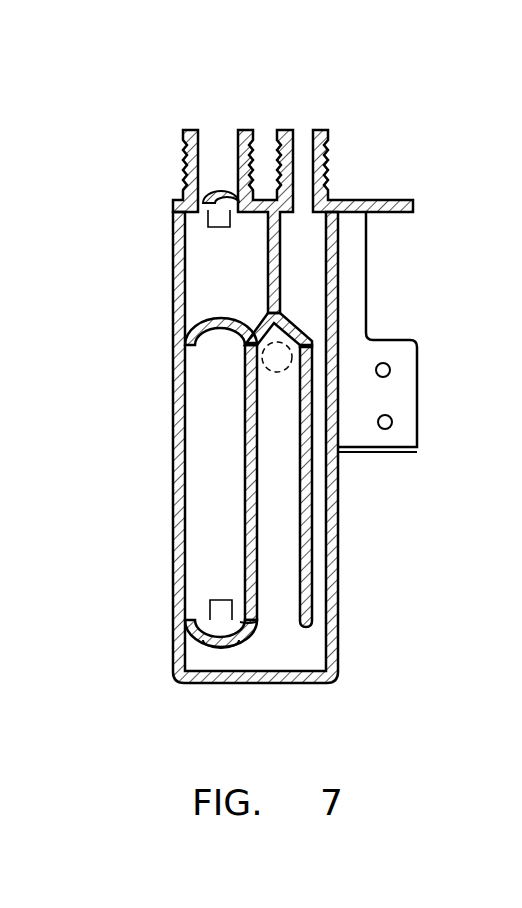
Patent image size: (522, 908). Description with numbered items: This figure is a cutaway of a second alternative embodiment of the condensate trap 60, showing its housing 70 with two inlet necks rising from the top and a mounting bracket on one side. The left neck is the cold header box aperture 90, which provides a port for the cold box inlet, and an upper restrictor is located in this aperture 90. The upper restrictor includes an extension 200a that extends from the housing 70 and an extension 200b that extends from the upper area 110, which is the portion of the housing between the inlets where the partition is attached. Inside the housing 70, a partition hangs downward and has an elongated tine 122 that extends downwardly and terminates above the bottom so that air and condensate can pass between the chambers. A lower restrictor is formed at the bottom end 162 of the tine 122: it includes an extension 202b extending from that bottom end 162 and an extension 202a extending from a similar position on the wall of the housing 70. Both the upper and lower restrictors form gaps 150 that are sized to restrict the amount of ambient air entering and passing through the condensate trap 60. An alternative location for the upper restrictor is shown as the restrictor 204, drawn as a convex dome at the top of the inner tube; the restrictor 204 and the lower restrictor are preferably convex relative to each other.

The condensate trap 60 is at (402, 162).
The housing 70 is at (173, 343).
The cold header box aperture 90 is at (210, 143).
The upper area 110 is at (267, 200).
The elongated tine 122 is at (243, 493).
The gaps 150 is at (219, 227).
The bottom end of the tine 162 is at (257, 623).
The extension of the upper restrictor 200a is at (173, 222).
The extension of the upper restrictor 200b is at (232, 190).
The extension of the lower restrictor 202a is at (178, 652).
The extension of the lower restrictor 202b is at (253, 625).
The restrictor 204 is at (193, 325).